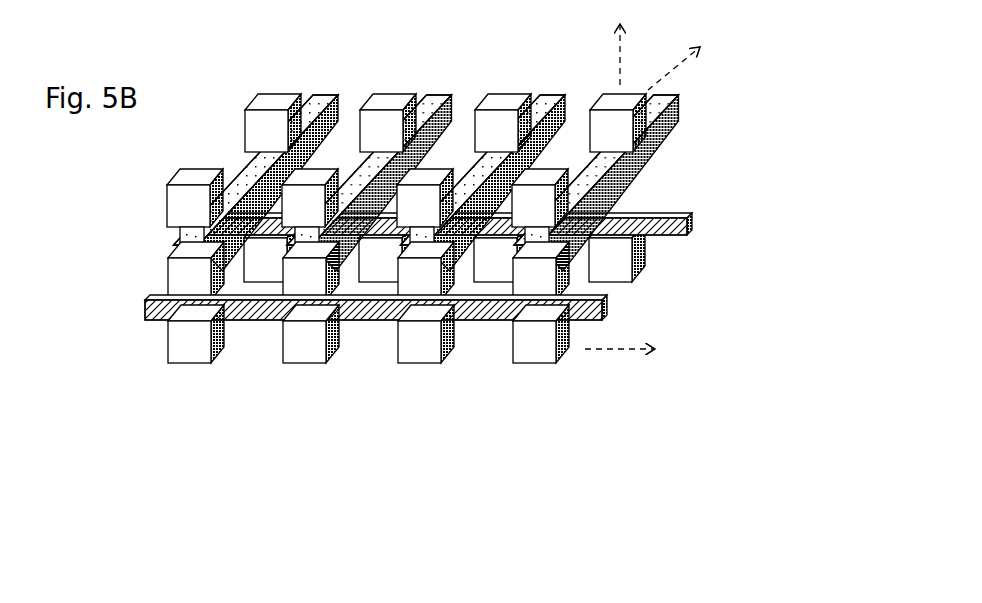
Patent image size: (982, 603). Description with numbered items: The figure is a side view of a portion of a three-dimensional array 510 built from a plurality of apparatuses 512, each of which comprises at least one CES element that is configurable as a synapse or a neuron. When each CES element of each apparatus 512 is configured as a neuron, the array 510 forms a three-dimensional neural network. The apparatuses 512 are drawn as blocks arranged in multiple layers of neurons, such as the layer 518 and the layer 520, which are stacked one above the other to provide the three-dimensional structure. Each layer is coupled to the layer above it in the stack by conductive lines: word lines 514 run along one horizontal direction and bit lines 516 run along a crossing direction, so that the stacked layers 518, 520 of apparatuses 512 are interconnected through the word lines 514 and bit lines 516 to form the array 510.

The 3D array 510 is at (400, 286).
The apparatus 512 is at (532, 364).
The word line 514 is at (607, 311).
The bit line 516 is at (670, 125).
The layer 518 is at (370, 348).
The layer 520 is at (402, 206).